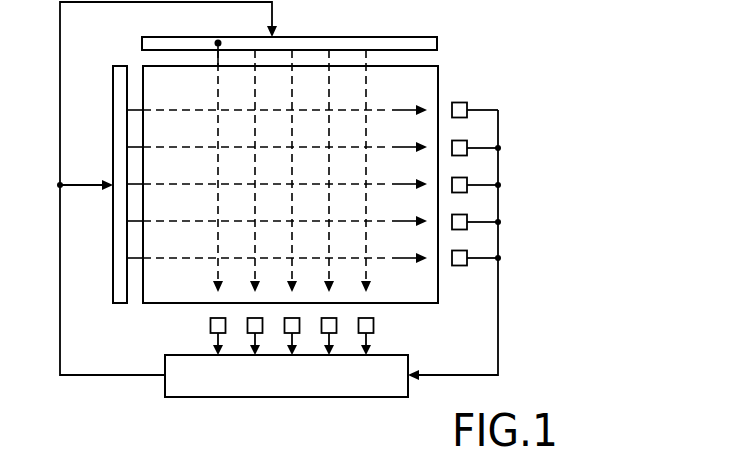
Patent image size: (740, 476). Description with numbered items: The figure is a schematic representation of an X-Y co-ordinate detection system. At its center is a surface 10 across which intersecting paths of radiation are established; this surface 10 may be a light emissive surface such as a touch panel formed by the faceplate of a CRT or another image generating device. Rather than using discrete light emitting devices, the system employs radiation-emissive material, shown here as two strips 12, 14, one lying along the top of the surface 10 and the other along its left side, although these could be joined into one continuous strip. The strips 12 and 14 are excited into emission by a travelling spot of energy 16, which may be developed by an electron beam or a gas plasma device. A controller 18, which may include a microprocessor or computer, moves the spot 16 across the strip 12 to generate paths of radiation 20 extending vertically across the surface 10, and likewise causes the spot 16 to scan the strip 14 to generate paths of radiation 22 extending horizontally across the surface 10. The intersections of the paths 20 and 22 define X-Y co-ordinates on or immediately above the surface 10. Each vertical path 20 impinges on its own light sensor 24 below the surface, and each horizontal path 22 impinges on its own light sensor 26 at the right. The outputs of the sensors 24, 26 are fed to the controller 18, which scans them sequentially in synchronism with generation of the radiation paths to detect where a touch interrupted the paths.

The surface 10 is at (424, 79).
The strip of radiation-emissive material 12 is at (346, 42).
The strip of radiation-emissive material 14 is at (114, 246).
The spot of energy 16 is at (218, 43).
The controller 18 is at (230, 398).
The paths of radiation 20 is at (256, 168).
The paths of radiation 22 is at (311, 148).
The light sensor 24 is at (249, 318).
The light sensor 26 is at (468, 118).